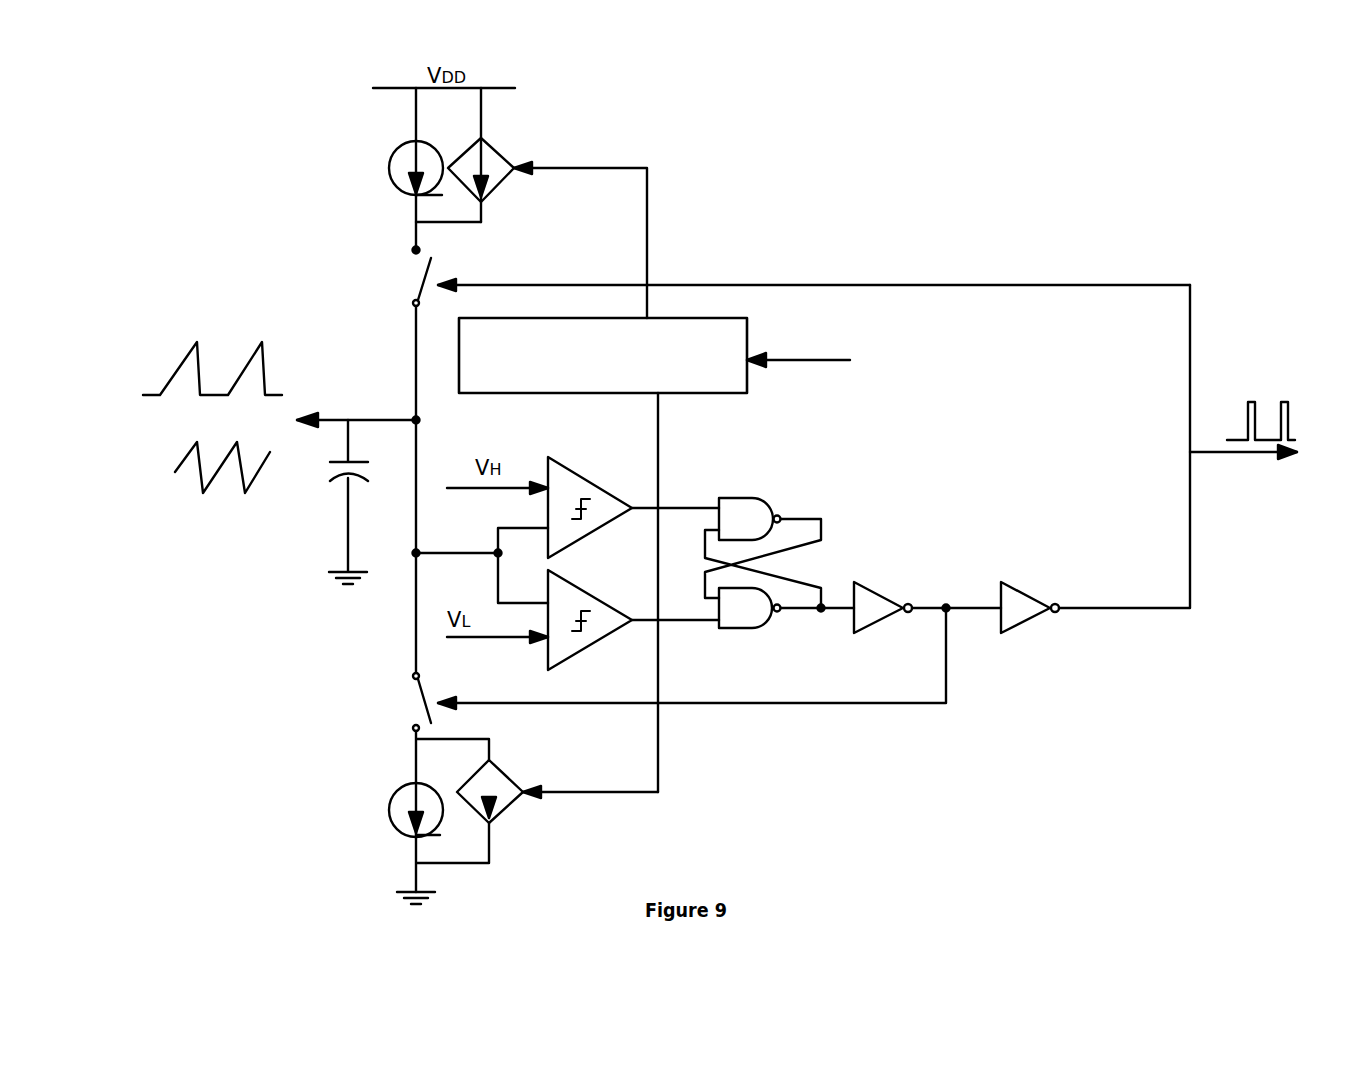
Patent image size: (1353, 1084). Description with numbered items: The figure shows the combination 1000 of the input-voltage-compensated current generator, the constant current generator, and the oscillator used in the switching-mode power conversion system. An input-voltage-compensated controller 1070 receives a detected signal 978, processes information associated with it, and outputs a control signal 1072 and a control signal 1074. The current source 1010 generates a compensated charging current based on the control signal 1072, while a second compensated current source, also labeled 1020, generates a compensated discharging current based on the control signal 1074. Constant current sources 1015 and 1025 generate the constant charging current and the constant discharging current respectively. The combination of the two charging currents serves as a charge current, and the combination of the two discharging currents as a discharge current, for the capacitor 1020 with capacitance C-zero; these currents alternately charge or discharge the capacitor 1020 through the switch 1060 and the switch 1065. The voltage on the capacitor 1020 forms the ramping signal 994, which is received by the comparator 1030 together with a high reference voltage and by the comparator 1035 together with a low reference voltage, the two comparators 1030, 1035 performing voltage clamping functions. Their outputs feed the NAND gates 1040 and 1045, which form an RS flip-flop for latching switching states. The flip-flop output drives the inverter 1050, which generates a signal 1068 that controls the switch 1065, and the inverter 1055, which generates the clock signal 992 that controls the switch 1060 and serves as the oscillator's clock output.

The combination 1000 is at (264, 154).
The current source 1015 is at (402, 150).
The current source 1010 is at (490, 150).
The control signal 1072 is at (628, 168).
The switch 1060 is at (437, 264).
The detected signal 978 is at (803, 358).
The input-voltage-compensated controller 1070 is at (727, 395).
The ramping signal 994 is at (328, 425).
The capacitor 1020 is at (363, 483).
The comparator 1030 is at (560, 457).
The comparator 1035 is at (582, 652).
The NAND gate 1040 is at (771, 503).
The NAND gate 1045 is at (773, 623).
The inverter 1050 is at (892, 618).
The inverter 1055 is at (1013, 627).
The clock signal 992 is at (1216, 456).
The signal 1068 is at (848, 703).
The switch 1065 is at (437, 718).
The current source 1025 is at (386, 817).
The control signal 1074 is at (618, 793).